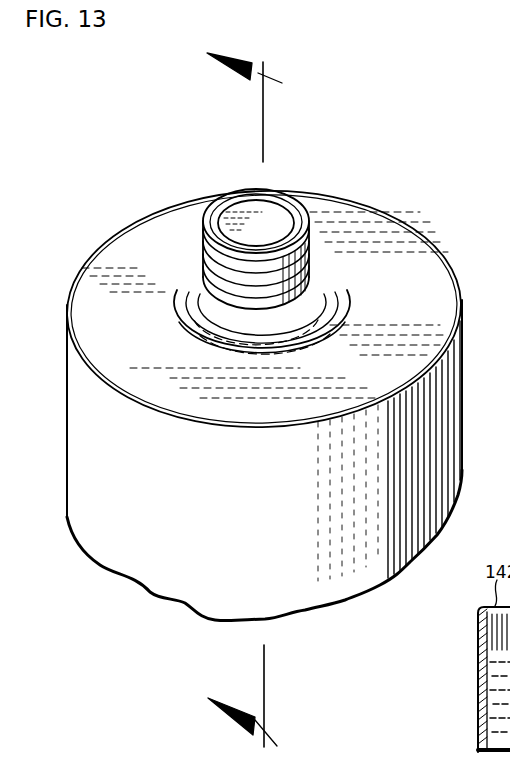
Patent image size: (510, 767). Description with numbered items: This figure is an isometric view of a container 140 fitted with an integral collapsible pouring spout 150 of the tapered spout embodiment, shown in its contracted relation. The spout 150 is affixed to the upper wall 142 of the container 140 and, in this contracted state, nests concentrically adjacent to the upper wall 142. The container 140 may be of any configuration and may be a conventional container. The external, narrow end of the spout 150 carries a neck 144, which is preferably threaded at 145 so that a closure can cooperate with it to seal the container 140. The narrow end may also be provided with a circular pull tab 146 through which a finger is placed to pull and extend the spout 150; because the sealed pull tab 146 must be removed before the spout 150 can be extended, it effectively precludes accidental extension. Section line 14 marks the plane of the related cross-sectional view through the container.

The section line 14- 14 is at (248, 405).
The container 140 is at (462, 358).
The upper wall 142 is at (423, 258).
The neck 144 is at (300, 210).
The threads 145 is at (207, 283).
The pull tab 146 is at (257, 220).
The pouring spout 150 is at (333, 268).